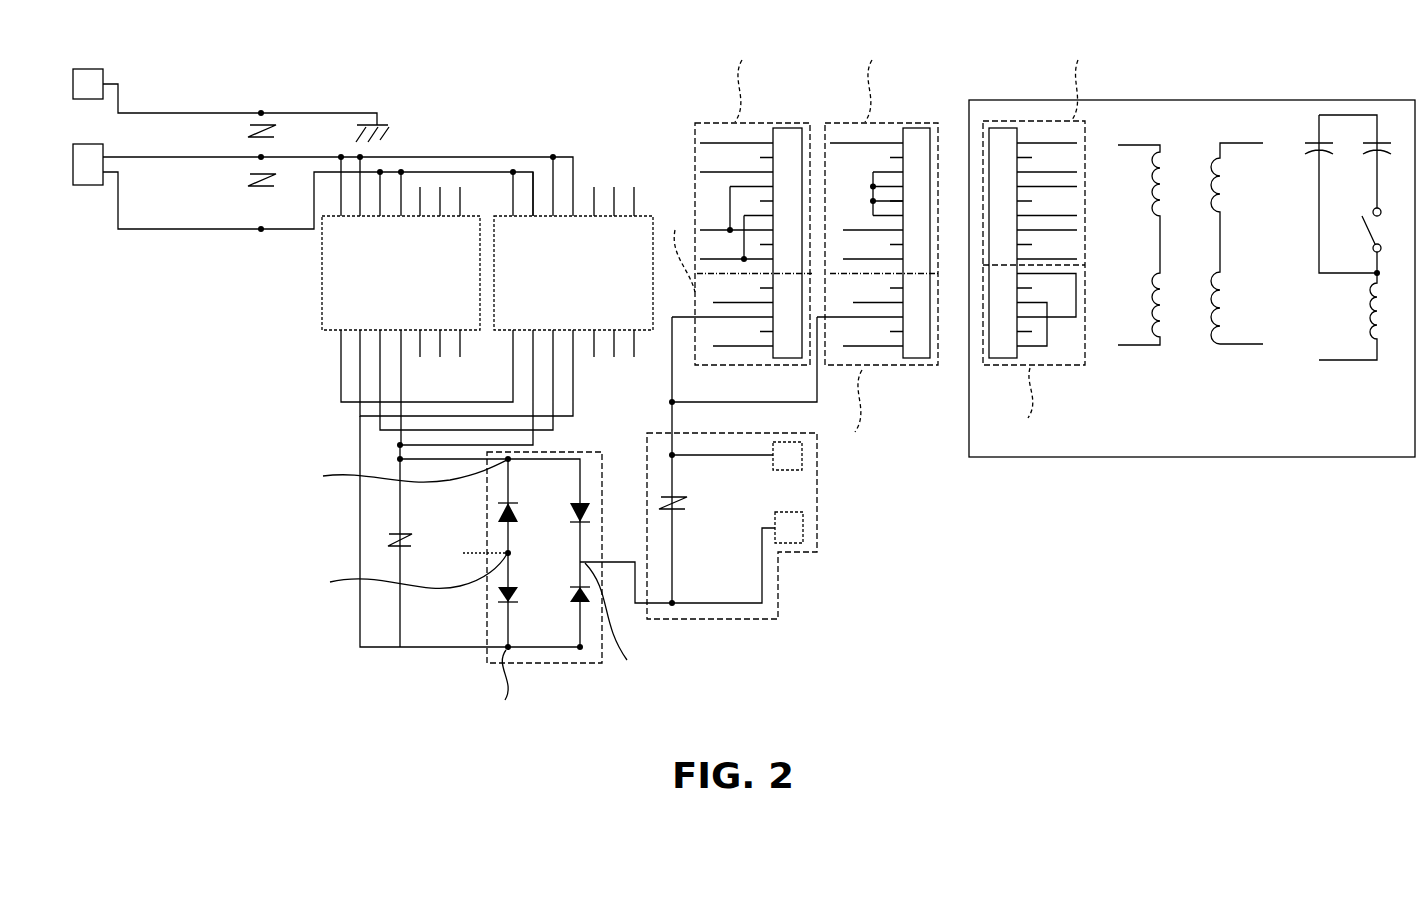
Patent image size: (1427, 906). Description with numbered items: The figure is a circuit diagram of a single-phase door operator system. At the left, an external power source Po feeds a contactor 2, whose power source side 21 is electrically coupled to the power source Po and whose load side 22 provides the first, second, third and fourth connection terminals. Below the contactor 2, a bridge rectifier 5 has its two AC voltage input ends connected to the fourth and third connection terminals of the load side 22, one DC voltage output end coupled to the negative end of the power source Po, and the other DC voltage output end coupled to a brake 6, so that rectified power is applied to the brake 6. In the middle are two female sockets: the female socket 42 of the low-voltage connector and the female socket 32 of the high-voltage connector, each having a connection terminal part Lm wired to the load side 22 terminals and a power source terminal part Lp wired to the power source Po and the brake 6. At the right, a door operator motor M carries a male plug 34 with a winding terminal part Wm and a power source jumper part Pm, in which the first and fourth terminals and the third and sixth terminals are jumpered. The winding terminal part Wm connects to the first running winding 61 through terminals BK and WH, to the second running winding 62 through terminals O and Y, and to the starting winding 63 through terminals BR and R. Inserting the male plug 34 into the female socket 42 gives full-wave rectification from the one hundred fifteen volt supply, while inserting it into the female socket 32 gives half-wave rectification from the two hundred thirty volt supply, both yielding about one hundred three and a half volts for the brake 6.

The external power source Po is at (92, 222).
The contactor 2 is at (328, 282).
The power source side 21 is at (479, 200).
The load side 22 is at (474, 345).
The rectifier 5 is at (575, 665).
The brake 6 is at (752, 621).
The female socket 42 is at (787, 128).
The female socket 32 is at (917, 128).
The male plug 34 is at (1005, 128).
The door operator motor M is at (1327, 458).
The first running winding 61 is at (1130, 298).
The second running winding 62 is at (1258, 297).
The starting winding 63 is at (1390, 315).